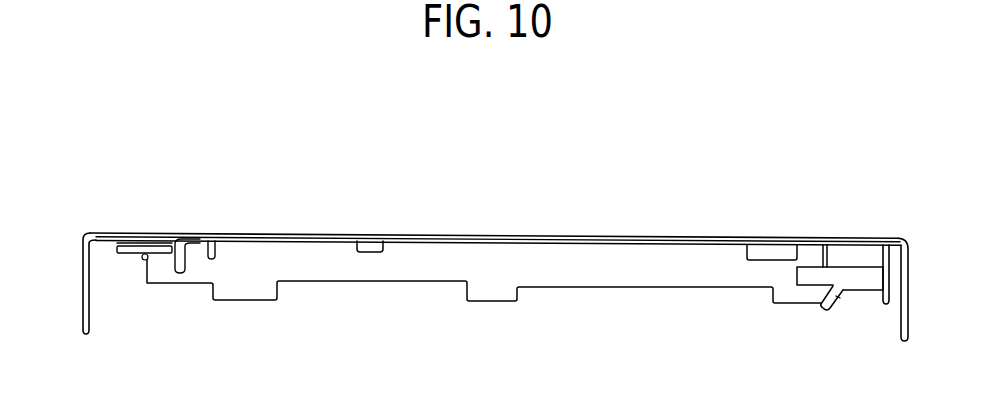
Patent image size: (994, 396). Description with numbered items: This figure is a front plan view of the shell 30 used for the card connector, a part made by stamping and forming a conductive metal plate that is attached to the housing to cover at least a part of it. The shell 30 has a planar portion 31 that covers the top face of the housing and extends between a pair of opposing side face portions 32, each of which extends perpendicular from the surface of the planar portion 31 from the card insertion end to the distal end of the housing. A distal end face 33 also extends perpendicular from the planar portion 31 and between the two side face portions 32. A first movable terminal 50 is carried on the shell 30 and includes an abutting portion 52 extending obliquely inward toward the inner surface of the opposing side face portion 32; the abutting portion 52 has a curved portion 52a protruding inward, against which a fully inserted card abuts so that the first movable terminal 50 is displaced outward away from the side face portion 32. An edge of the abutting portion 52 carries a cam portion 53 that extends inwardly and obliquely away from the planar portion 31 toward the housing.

The shell 30 is at (696, 176).
The planar portion 31 is at (614, 235).
The side face portion 32 is at (83, 272).
The distal end face 33 is at (593, 285).
The first movable terminal 50 is at (840, 298).
The abutting portion 52 is at (850, 268).
The curved portion 52a is at (810, 267).
The cam portion 53 is at (817, 307).